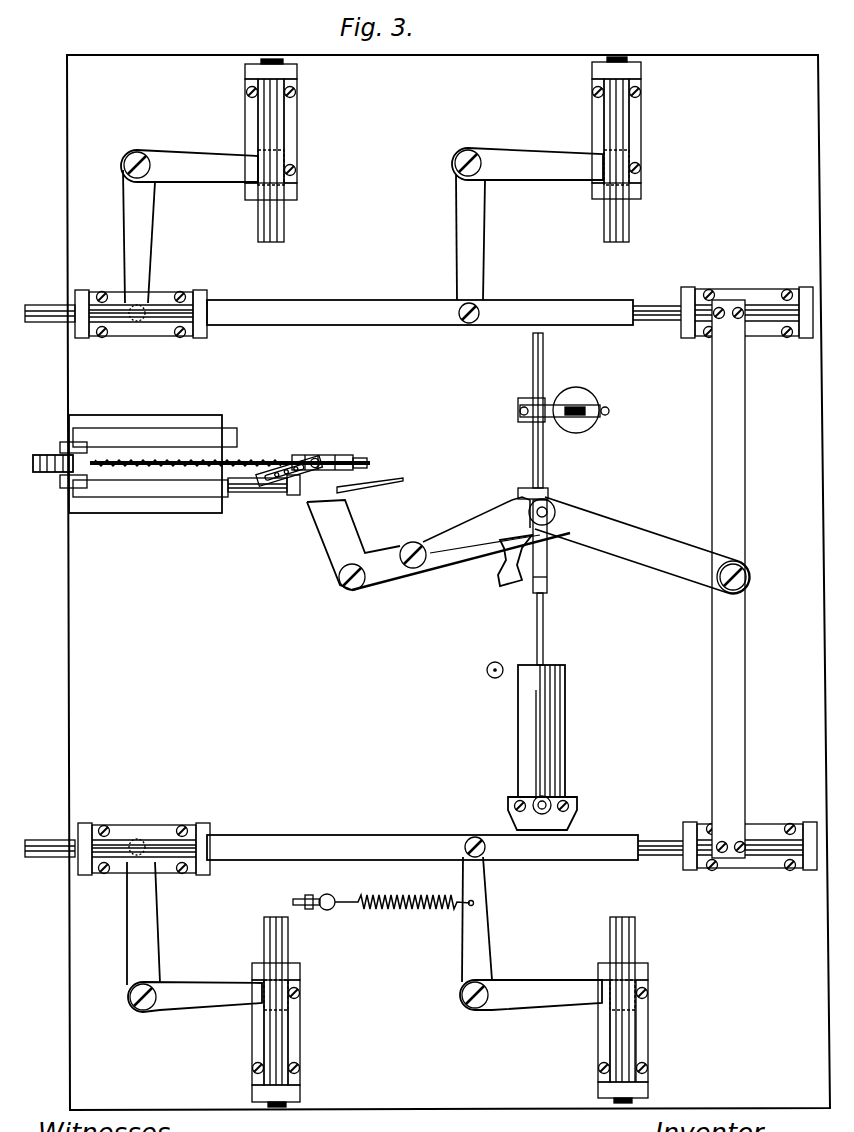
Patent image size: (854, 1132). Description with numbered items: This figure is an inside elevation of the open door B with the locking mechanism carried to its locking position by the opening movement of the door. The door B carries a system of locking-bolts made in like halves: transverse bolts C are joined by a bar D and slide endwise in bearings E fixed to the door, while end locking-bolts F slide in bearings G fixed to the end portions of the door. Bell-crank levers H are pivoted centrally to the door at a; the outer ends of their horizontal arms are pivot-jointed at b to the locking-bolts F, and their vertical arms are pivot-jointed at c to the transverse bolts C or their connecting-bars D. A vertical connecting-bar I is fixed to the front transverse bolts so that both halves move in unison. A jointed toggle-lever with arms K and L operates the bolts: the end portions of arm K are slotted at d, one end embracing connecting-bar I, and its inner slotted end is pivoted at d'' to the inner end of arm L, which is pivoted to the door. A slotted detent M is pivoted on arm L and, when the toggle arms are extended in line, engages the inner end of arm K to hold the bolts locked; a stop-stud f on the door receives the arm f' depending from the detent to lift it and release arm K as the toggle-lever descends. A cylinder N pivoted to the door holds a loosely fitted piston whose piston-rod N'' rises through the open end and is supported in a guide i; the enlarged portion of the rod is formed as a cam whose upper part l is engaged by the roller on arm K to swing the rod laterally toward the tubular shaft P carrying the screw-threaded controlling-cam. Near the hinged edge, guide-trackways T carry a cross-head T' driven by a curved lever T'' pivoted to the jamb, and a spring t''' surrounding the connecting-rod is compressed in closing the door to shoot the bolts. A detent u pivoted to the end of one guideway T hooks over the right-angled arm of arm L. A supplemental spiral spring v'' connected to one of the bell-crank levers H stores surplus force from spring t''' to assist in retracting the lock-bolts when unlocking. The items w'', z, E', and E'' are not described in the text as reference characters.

The door B is at (448, 582).
The bar D is at (354, 580).
The bearings E is at (446, 578).
The bolts C is at (453, 580).
The vertical connecting-bar I is at (729, 579).
The bearings G is at (456, 582).
The locking-bolts F is at (445, 582).
The pivot-joint b is at (439, 580).
The bell-crank levers H is at (362, 580).
The central pivot-connection a is at (300, 574).
The pivot-joint c is at (307, 577).
The guide-trackways T is at (153, 464).
The cross-head T' is at (73, 465).
The curved lever T'' is at (49, 453).
The spiral spring t''' is at (230, 464).
The rod w'' is at (264, 493).
The detent u is at (370, 492).
The slotted lever z is at (302, 459).
The arm of toggle-lever L is at (353, 545).
The lever pivot E' is at (343, 585).
The lever pin E'' is at (427, 556).
The detent M is at (461, 543).
The arm of detent f' is at (514, 569).
The arm of toggle-lever K is at (642, 545).
The vertical slot d is at (729, 575).
The pivotal connection d'' is at (550, 513).
The upper part of cam l is at (537, 490).
The guide i is at (524, 410).
The tubular shaft P is at (569, 402).
The piston-rod N'' is at (549, 582).
The cylinder N is at (546, 747).
The stop-stud f is at (493, 681).
The supplemental spiral spring v'' is at (383, 900).